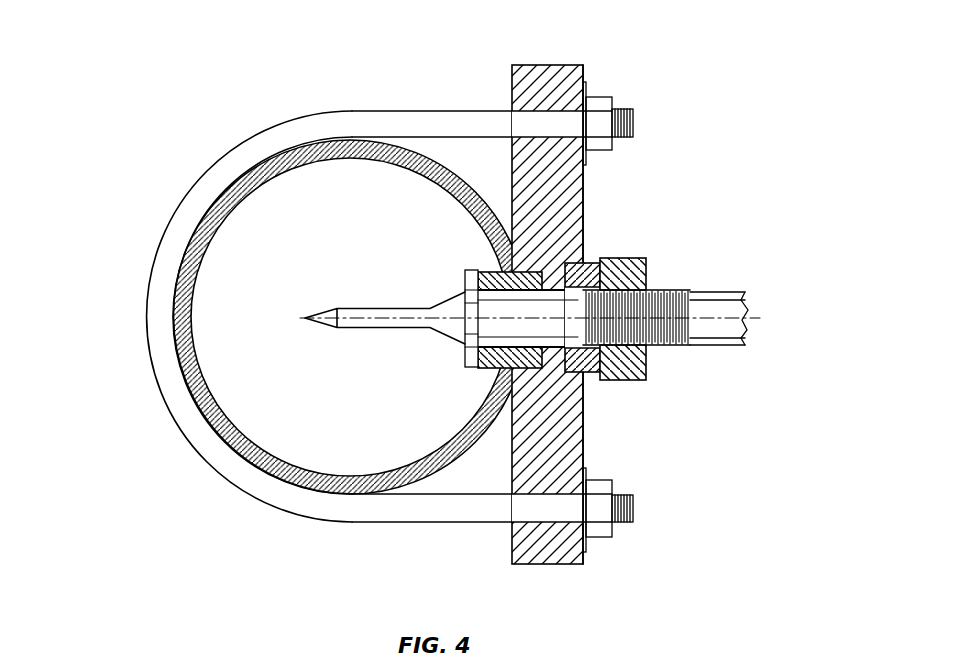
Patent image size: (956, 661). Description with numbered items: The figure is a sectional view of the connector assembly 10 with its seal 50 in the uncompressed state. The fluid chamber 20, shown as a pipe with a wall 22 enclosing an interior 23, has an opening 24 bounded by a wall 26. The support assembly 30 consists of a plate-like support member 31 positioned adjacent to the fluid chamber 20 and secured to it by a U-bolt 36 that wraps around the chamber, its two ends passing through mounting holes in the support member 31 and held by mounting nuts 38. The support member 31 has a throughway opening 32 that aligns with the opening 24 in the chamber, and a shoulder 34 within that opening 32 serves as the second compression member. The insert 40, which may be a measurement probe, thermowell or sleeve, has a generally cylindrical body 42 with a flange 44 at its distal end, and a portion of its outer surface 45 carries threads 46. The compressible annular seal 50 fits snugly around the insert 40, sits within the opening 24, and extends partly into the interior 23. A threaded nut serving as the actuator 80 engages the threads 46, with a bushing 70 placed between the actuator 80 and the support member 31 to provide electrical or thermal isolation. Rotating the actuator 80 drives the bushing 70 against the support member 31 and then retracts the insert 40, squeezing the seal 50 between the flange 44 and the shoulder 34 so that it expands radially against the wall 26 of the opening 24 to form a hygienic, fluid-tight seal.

The connector assembly 10 is at (728, 204).
The fluid chamber 20 is at (421, 343).
The wall 22 is at (202, 225).
The interior 23 is at (248, 315).
The opening 24 is at (578, 418).
The wall of the opening 26 is at (580, 445).
The support assembly 30 is at (605, 48).
The support member 31 is at (583, 185).
The opening 32 is at (572, 262).
The shoulder 34 is at (582, 413).
The U-bolt 36 is at (445, 117).
The mounting nuts 38 is at (600, 98).
The insert 40 is at (714, 260).
The body 42 is at (713, 347).
The flange 44 is at (478, 292).
The outer surface 45 is at (552, 350).
The threads 46 is at (660, 352).
The seal 50 is at (468, 268).
The bushing 70 is at (590, 270).
The actuator 80 is at (618, 258).